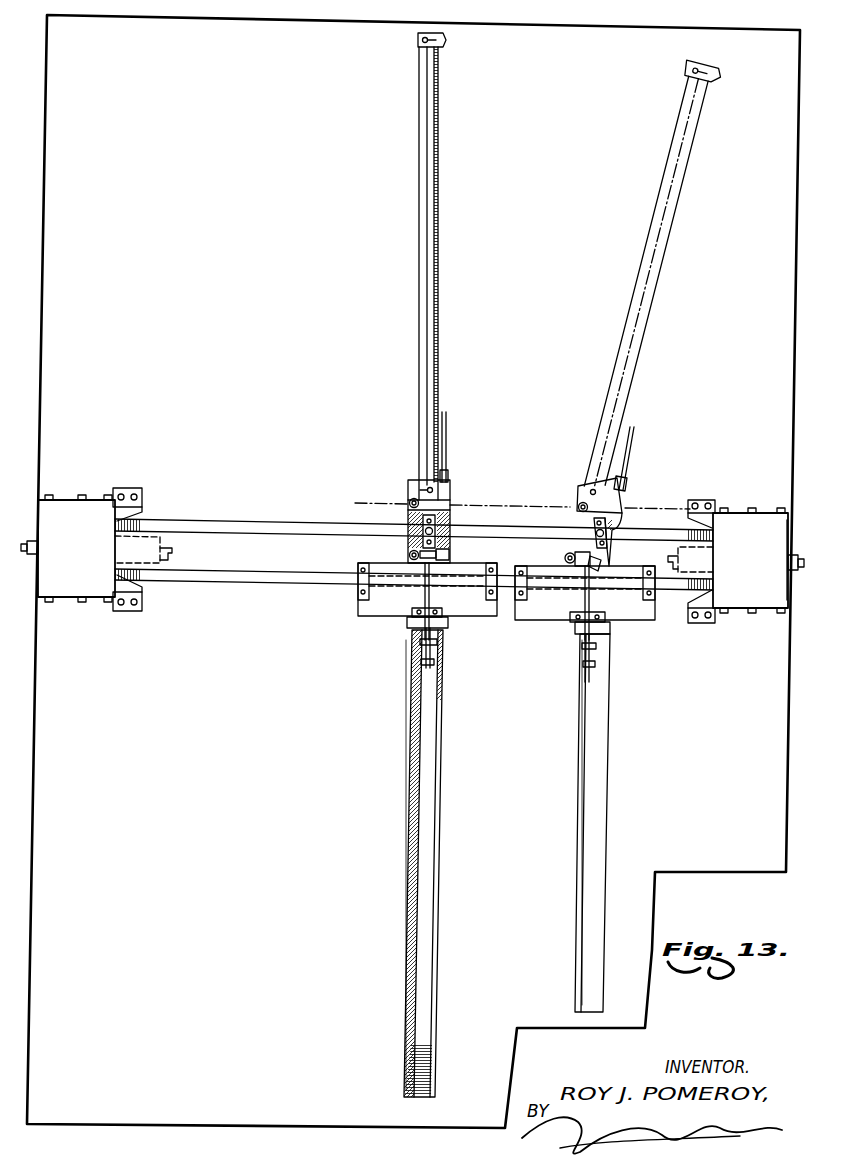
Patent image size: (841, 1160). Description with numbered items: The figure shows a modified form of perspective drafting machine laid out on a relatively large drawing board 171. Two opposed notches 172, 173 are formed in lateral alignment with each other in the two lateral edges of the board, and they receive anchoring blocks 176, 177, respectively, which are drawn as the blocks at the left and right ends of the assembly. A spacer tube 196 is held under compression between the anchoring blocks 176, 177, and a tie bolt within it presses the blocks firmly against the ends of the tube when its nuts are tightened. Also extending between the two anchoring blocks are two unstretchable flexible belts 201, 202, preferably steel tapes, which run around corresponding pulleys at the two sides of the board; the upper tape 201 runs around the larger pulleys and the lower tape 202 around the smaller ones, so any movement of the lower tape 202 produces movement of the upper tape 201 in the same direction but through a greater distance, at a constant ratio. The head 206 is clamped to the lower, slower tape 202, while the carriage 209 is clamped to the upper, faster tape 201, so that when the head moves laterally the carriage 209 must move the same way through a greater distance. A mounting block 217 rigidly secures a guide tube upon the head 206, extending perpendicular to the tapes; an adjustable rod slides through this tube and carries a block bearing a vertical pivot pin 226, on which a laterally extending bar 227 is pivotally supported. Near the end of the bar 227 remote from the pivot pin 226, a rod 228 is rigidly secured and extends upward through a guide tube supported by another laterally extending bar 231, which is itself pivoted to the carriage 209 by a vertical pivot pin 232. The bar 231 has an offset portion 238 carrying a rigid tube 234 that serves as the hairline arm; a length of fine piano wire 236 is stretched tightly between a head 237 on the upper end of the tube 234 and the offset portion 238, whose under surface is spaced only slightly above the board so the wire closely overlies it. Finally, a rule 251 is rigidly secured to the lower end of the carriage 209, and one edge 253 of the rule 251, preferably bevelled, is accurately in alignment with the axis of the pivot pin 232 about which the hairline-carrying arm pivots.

The drawing board 171 is at (198, 1118).
The notch 172 is at (86, 480).
The notch 173 is at (763, 512).
The anchoring block 176 is at (84, 508).
The anchoring block 177 is at (722, 530).
The spacer tube 196 is at (163, 527).
The belt 201 is at (245, 520).
The belt 202 is at (255, 581).
The head 206 is at (386, 602).
The carriage 209 is at (448, 554).
The mounting block 217 is at (438, 615).
The vertical pivot pin 226 is at (409, 554).
The laterally extending bar 227 is at (603, 566).
The rod 228 is at (448, 427).
The laterally extending bar 231 is at (450, 494).
The vertical pivot pin 232 is at (409, 505).
The rigid tube 234 is at (439, 355).
The piano wire 236 is at (416, 291).
The head 237 is at (419, 39).
The offset portion 238 is at (412, 483).
The rule 251 is at (436, 826).
The edge 253 is at (412, 752).